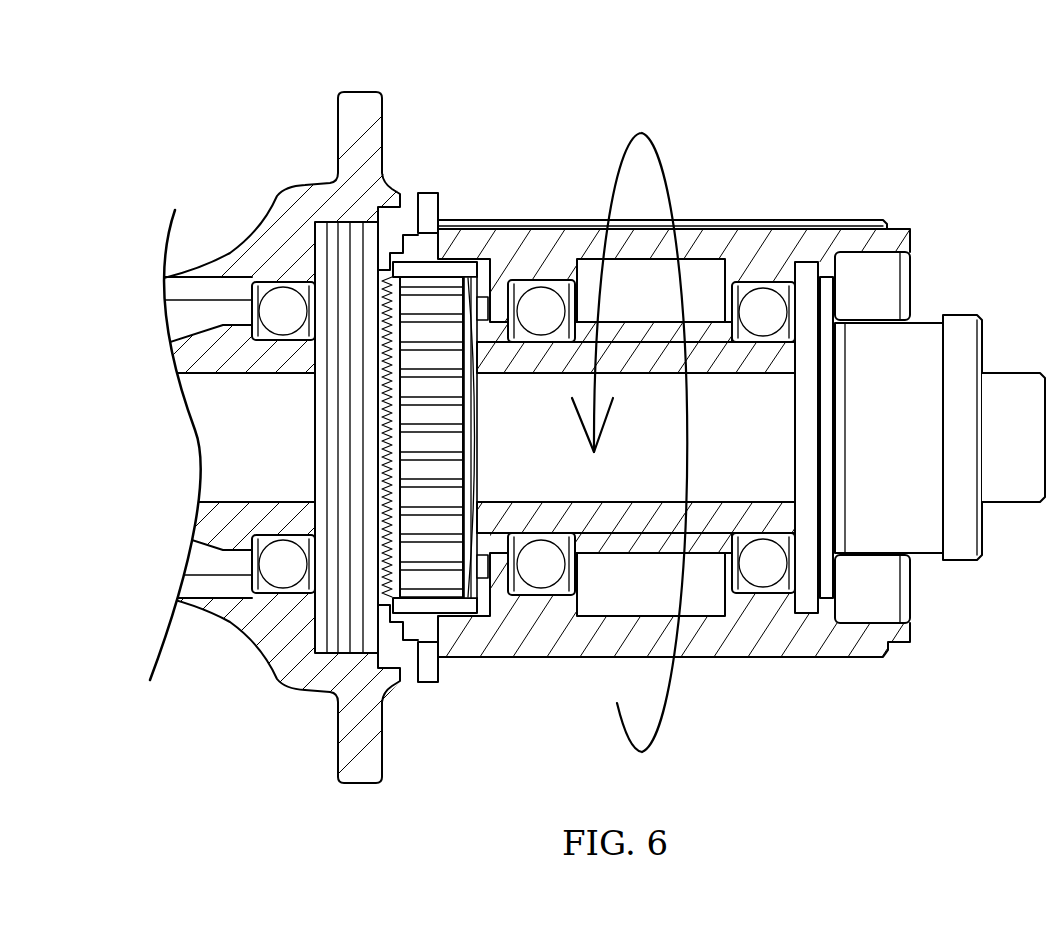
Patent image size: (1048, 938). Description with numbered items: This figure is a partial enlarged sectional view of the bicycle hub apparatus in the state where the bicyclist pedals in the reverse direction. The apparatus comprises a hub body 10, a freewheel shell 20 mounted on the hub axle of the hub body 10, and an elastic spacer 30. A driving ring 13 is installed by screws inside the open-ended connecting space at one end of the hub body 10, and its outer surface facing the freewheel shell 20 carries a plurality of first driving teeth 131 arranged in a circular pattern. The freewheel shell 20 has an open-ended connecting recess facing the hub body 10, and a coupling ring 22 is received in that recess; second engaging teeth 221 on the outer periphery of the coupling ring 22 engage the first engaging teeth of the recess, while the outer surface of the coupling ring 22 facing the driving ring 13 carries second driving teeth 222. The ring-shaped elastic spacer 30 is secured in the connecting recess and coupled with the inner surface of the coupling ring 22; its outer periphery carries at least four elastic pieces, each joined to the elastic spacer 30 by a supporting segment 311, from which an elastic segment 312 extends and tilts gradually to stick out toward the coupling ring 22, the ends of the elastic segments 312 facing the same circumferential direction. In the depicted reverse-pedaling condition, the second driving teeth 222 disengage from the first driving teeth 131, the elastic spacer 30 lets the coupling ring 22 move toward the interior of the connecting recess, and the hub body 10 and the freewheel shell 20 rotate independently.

The hub body 10 is at (572, 166).
The freewheel shell 20 is at (227, 222).
The driving ring 13 is at (330, 243).
The first driving teeth 131 is at (380, 498).
The coupling ring 22 is at (442, 272).
The second engaging teeth 221 is at (407, 278).
The second driving teeth 222 is at (395, 435).
The elastic spacer 30 is at (490, 490).
The supporting segment 311 is at (468, 500).
The elastic segment 312 is at (447, 430).